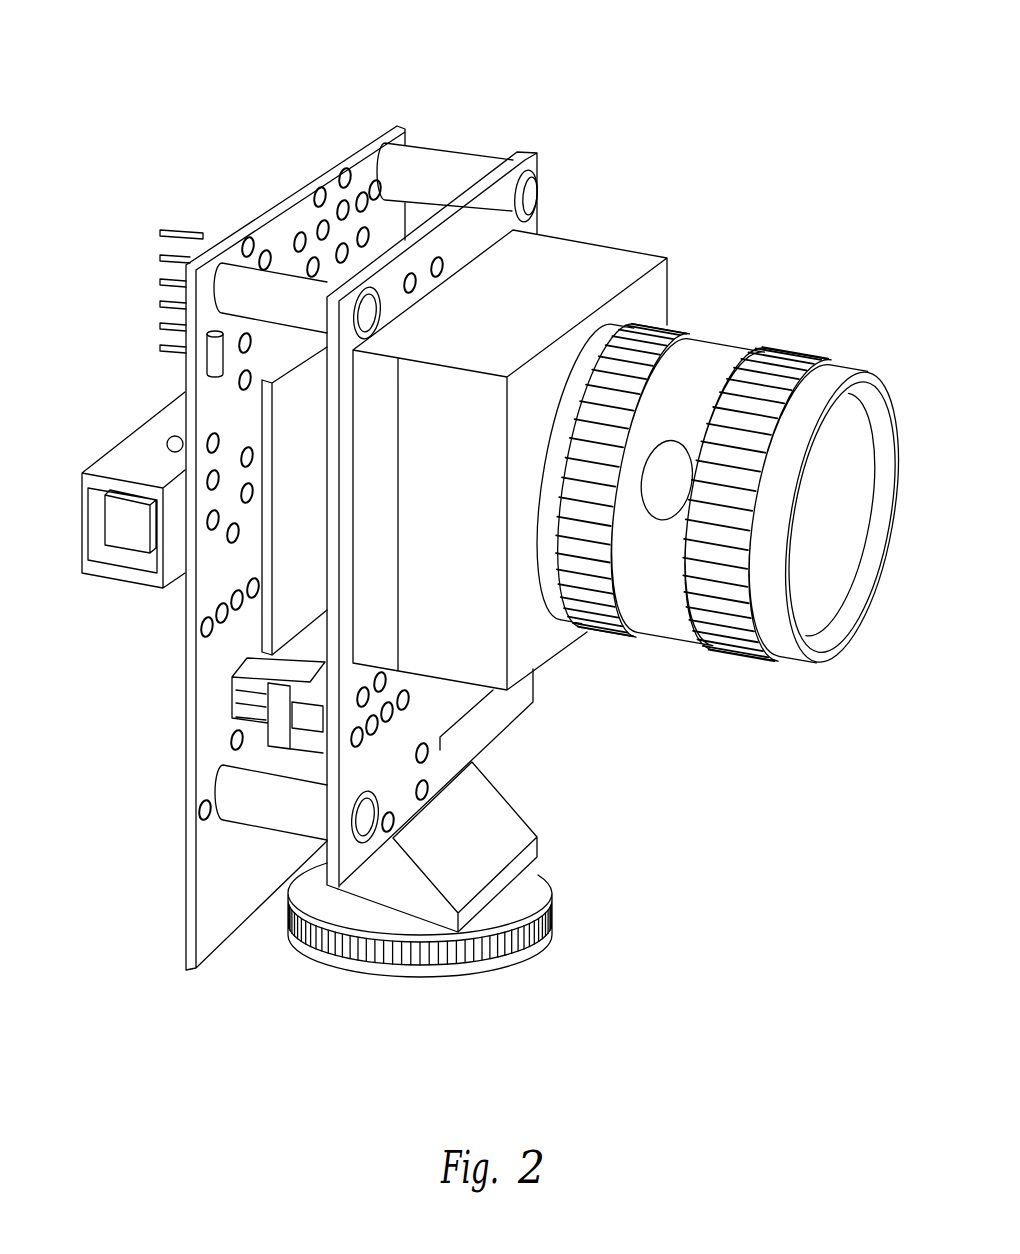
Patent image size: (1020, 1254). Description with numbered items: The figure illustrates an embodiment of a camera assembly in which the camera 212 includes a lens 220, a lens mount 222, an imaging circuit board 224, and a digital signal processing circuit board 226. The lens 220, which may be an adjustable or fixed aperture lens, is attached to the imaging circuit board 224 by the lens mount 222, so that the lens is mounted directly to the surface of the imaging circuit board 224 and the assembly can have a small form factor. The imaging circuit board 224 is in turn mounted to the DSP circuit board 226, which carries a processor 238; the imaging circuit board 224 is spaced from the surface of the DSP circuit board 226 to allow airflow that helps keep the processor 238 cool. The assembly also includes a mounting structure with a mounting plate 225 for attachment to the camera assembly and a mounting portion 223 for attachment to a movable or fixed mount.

The camera 212 is at (500, 491).
The lens 220 is at (814, 357).
The lens mount 222 is at (591, 245).
The mounting portion 223 is at (548, 877).
The imaging circuit board 224 is at (510, 183).
The mounting plate 225 is at (507, 797).
The DSP circuit board 226 is at (390, 126).
The processor 238 is at (294, 405).